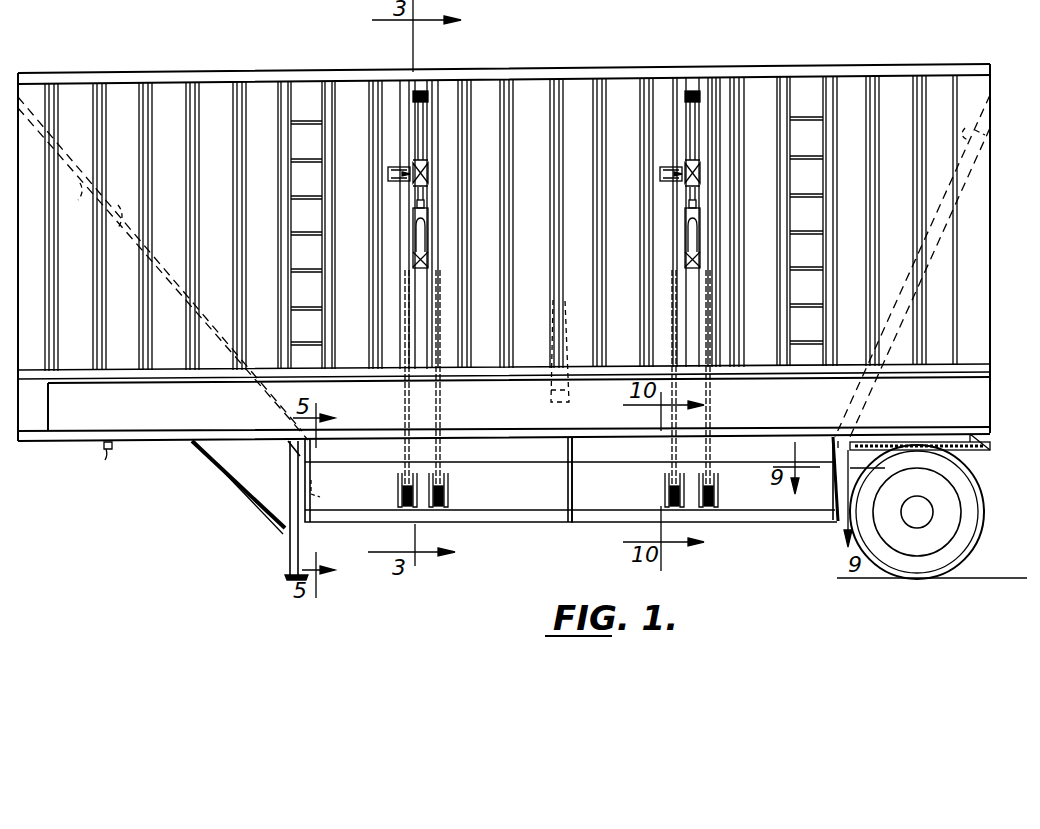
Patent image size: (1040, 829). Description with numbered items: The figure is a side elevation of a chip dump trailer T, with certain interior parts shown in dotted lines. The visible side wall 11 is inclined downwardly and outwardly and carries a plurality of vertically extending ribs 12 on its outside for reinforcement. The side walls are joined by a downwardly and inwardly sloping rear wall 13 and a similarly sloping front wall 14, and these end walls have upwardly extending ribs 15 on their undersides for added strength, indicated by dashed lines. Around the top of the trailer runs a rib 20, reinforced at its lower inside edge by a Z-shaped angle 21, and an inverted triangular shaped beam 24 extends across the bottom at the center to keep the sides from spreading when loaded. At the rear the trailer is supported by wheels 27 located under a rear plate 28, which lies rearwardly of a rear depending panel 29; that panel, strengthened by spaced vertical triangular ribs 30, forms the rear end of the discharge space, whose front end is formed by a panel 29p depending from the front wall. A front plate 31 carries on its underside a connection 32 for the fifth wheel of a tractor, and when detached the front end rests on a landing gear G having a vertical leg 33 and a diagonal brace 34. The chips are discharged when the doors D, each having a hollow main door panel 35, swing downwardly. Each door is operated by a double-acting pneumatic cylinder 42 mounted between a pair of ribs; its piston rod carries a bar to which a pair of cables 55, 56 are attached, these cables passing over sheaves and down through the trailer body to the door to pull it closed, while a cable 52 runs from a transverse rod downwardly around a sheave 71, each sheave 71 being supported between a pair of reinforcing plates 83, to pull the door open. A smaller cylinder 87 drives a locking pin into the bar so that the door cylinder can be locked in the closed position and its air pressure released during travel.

The chip dump trailer T is at (116, 74).
The side wall 11 is at (166, 98).
The ribs 12 is at (509, 190).
The rear wall 13 is at (991, 142).
The front wall 14 is at (119, 222).
The ribs 15 is at (81, 187).
The rib 20 is at (35, 85).
The Z-shaped angle 21 is at (539, 373).
The inverted triangular shaped beam 24 is at (569, 405).
The wheels 27 is at (985, 498).
The rear plate 28 is at (991, 446).
The rear depending panel 29 is at (836, 474).
The front depending panel 29p is at (331, 494).
The triangular ribs 30 is at (834, 452).
The front plate 31 is at (45, 443).
The connection 32 is at (107, 450).
The vertical leg 33 is at (291, 550).
The diagonal brace 34 is at (222, 477).
The main door panel 35 is at (525, 514).
The pneumatic cylinder 42 is at (421, 234).
The cable 52 is at (405, 390).
The cable 55 is at (413, 110).
The cable 56 is at (428, 116).
The sheave 71 is at (403, 493).
The reinforcing plates 83 is at (724, 459).
The cylinder 87 is at (388, 185).
The doors D is at (491, 502).
The landing gear G is at (244, 504).